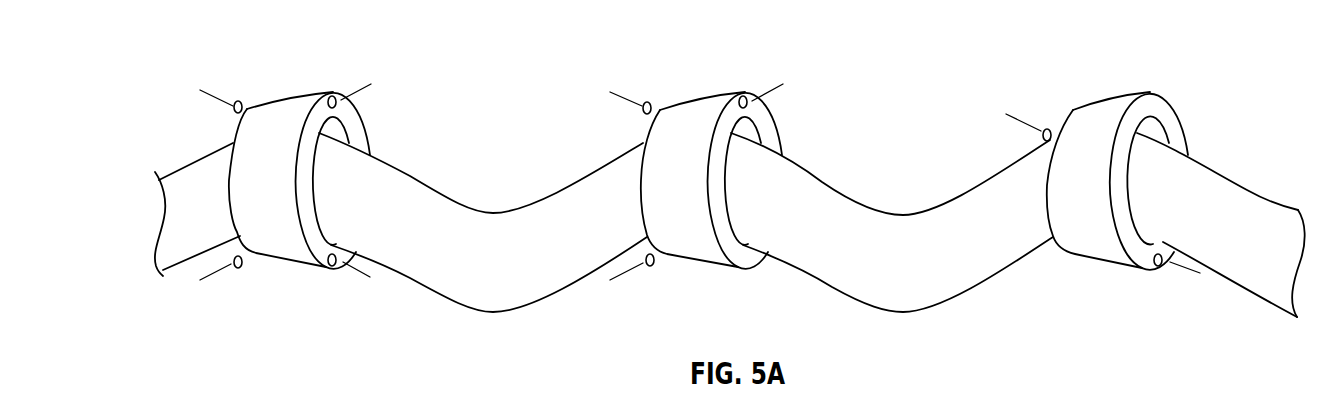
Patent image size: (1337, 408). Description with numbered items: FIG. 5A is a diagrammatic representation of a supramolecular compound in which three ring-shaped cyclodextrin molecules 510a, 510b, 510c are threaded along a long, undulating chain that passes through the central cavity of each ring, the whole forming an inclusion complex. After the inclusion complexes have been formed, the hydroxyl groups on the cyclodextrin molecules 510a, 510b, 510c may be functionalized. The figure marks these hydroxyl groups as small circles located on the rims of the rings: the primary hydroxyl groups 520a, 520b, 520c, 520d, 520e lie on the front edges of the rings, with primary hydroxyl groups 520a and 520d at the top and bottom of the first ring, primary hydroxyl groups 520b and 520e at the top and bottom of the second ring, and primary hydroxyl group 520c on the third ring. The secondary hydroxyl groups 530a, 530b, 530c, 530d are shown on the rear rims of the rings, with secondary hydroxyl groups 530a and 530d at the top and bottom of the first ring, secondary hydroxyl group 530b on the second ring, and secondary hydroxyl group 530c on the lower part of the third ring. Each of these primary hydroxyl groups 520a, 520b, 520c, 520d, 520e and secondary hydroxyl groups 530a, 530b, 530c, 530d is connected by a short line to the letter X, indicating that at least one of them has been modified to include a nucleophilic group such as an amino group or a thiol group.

The cyclodextrin molecule 510a is at (293, 100).
The cyclodextrin molecule 510b is at (703, 98).
The cyclodextrin molecule 510c is at (1115, 100).
The primary hydroxyl group 520a is at (240, 94).
The primary hydroxyl group 520b is at (648, 97).
The primary hydroxyl group 520c is at (1045, 122).
The primary hydroxyl group 520d is at (240, 272).
The primary hydroxyl group 520e is at (650, 272).
The secondary hydroxyl group 530a is at (335, 92).
The secondary hydroxyl group 530b is at (742, 92).
The secondary hydroxyl group 530c is at (1158, 272).
The secondary hydroxyl group 530d is at (332, 273).